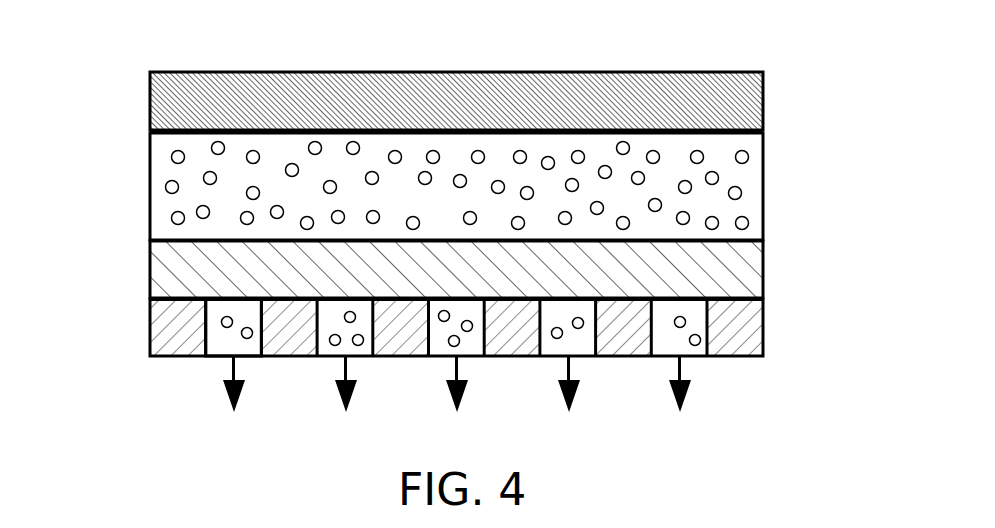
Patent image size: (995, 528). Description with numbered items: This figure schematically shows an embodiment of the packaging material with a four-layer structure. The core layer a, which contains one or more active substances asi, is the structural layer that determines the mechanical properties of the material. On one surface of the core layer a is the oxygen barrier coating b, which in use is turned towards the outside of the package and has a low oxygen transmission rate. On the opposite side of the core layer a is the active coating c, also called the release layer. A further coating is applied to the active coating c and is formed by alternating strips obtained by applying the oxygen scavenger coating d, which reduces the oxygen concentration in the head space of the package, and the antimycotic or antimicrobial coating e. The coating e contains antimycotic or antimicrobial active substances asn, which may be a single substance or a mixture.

The core layer a is at (449, 186).
The oxygen barrier coating b is at (152, 101).
The active coating c is at (163, 282).
The oxygen scavenger coating d is at (488, 379).
The antimycotic or antimicrobial coating e is at (425, 379).
The active substances asi is at (751, 154).
The antimycotic or antimicrobial active substances asn is at (213, 357).